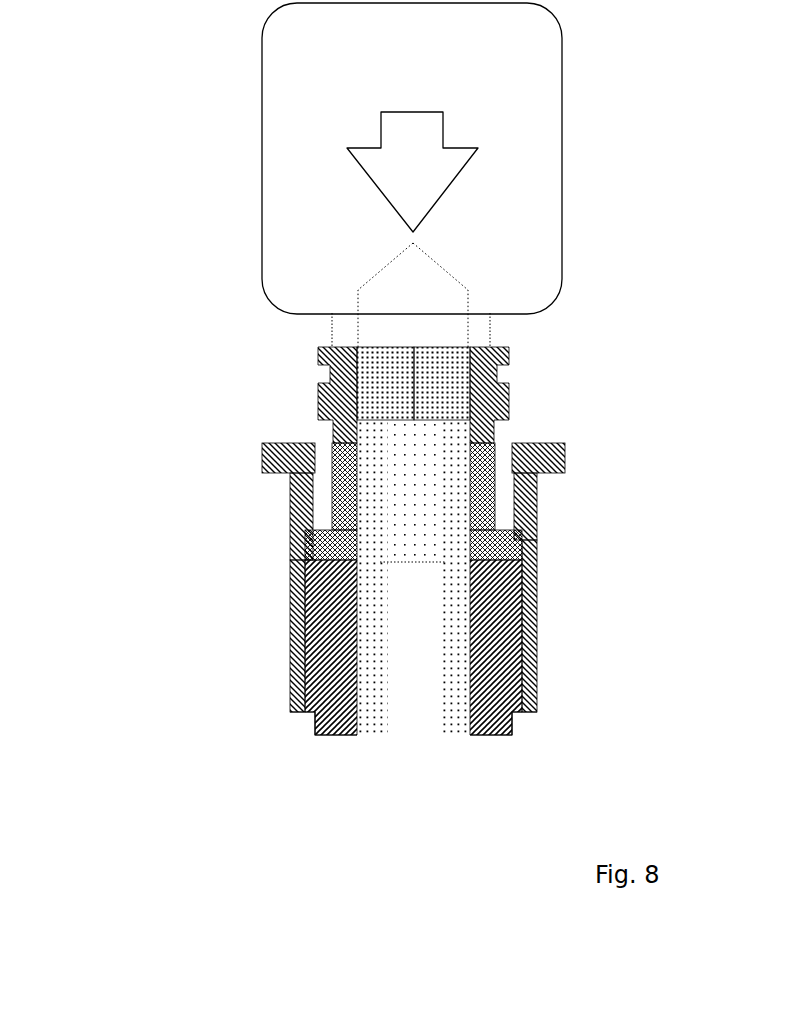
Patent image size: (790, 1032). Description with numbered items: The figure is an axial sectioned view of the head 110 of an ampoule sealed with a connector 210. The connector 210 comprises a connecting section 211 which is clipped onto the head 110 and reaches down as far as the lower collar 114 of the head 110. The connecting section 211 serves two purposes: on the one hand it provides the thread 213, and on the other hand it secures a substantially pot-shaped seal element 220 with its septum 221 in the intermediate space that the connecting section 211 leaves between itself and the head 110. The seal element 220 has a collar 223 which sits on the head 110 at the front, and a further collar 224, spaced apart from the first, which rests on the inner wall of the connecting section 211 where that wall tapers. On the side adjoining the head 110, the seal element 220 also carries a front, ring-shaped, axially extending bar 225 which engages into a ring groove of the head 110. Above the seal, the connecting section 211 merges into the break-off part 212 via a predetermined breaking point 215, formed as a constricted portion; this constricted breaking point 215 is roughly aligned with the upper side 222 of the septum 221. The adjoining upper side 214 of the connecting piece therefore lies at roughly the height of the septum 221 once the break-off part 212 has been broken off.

The break-off part 212 is at (285, 144).
The connector 210 is at (212, 540).
The predetermined breaking point 215 is at (472, 348).
The septum 221 is at (408, 353).
The upper side of the septum 222 is at (430, 347).
The upper side of the connecting piece 214 is at (333, 348).
The thread 213 is at (497, 397).
The seal element 220 is at (353, 458).
The collar 224 is at (483, 455).
The collar 223 is at (320, 537).
The connecting section 211 is at (521, 545).
The head 110 is at (500, 603).
The lower collar 114 is at (513, 712).
The bar 225 is at (378, 568).